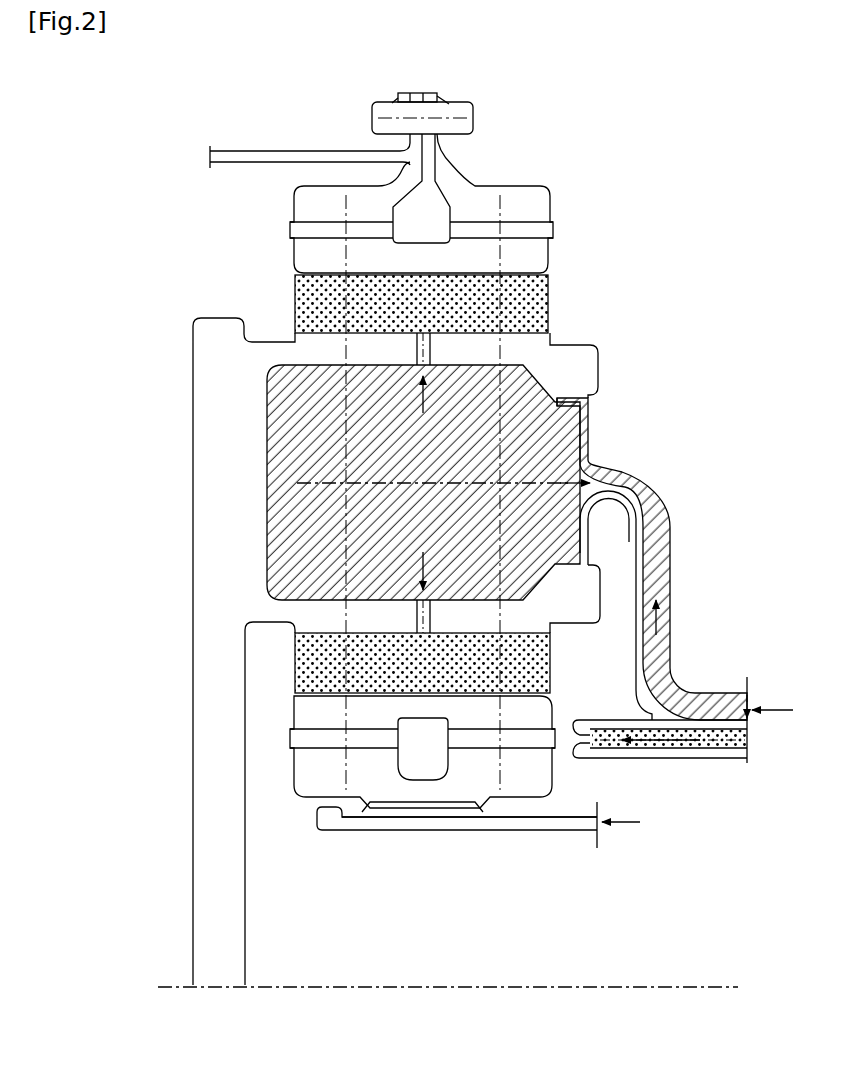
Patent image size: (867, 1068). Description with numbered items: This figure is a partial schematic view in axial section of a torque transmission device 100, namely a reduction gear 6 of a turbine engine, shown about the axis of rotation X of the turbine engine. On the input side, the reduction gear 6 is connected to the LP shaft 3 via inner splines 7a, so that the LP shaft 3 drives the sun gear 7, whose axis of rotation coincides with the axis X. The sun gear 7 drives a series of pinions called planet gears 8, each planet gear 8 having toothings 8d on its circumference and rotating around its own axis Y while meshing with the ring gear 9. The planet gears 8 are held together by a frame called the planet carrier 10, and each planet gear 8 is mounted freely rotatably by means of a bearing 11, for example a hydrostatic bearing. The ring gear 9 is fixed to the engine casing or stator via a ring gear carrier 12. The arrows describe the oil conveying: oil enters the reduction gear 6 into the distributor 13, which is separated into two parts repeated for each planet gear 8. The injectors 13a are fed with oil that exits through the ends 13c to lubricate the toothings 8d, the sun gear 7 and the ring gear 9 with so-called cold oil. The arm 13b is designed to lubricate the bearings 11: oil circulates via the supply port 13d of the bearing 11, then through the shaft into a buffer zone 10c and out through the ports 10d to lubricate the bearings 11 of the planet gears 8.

The vibration damping device 100 is at (123, 362).
The reduction gear 6 is at (476, 479).
The ring gear 9 is at (548, 188).
The bearing 11 is at (548, 297).
The planet carrier 10 is at (403, 520).
The buffer zone 10c is at (423, 482).
The ports 10d is at (433, 342).
The ring gear carrier 12 is at (252, 148).
The distributor 13 is at (571, 625).
The injectors 13a is at (685, 760).
The arm 13b is at (673, 549).
The ends 13c is at (575, 762).
The supply port 13d is at (590, 410).
The axis of the planet gear Y is at (548, 478).
The planet gear 8 is at (349, 789).
The toothings 8d is at (303, 740).
The sun gear 7 is at (302, 757).
The inner splines 7a is at (397, 810).
The LP shaft 3 is at (557, 823).
The axis of rotation of the turbine engine X is at (707, 988).